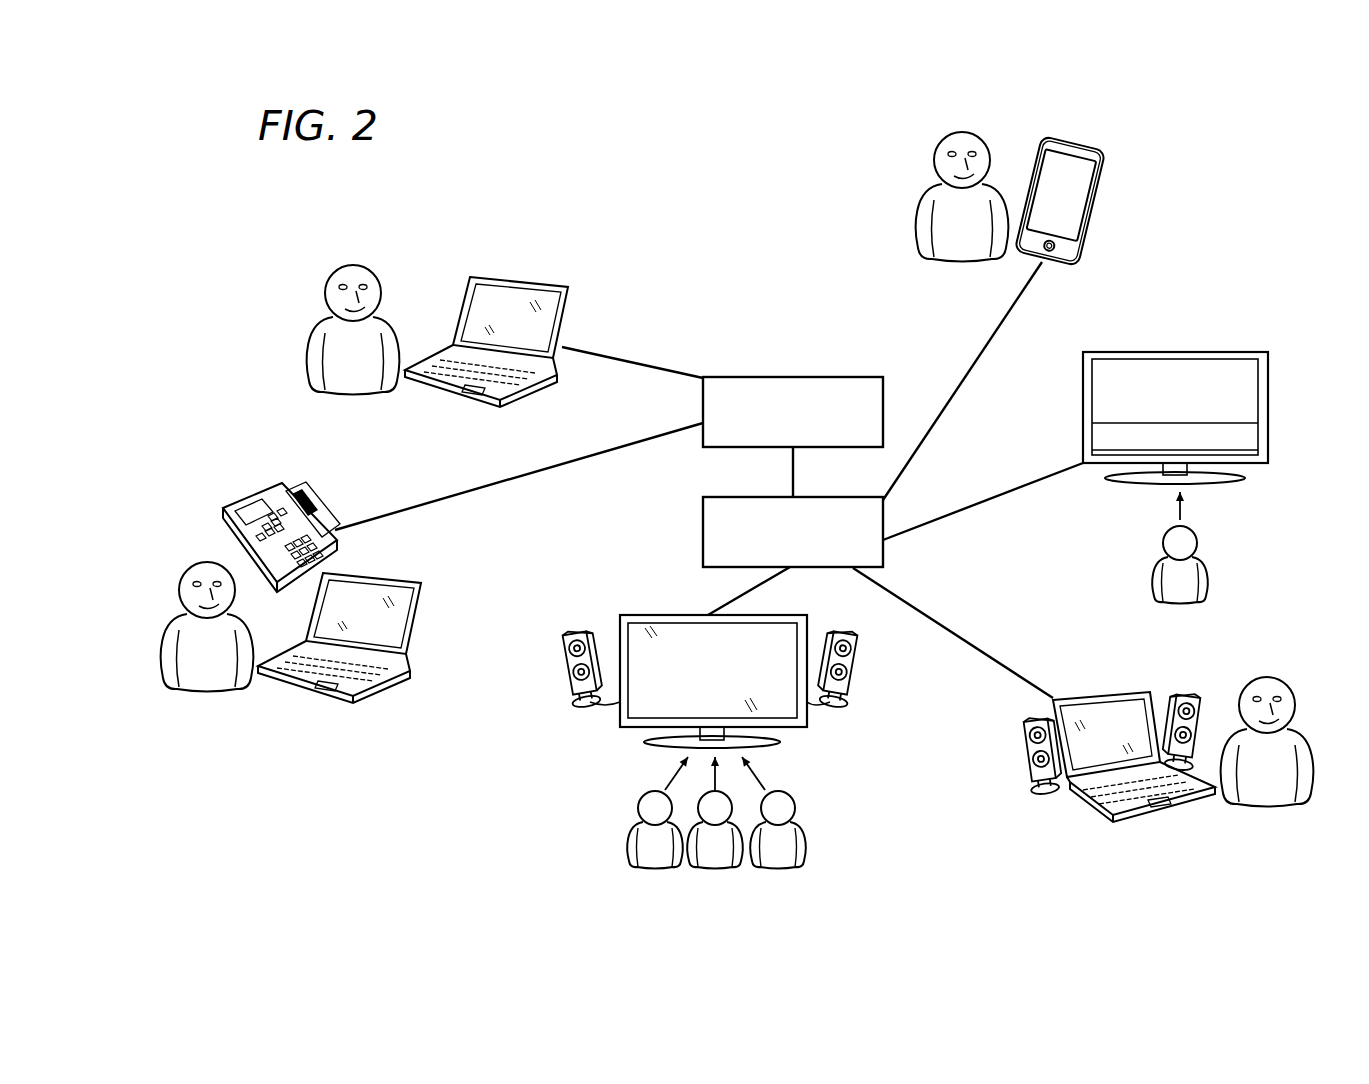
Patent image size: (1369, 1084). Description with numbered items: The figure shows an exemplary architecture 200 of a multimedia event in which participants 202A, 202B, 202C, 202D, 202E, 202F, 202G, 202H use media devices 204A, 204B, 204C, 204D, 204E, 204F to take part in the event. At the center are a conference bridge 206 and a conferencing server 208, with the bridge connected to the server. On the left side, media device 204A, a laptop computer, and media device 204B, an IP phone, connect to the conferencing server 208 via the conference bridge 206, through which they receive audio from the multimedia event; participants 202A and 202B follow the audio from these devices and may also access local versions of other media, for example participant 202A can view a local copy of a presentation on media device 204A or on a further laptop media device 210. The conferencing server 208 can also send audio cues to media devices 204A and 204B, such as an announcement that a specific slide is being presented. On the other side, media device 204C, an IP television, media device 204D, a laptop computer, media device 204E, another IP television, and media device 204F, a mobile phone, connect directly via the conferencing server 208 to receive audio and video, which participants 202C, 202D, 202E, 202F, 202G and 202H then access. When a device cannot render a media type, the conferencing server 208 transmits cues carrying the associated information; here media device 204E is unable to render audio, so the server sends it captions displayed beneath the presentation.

The architecture 200 is at (680, 215).
The participant 202A is at (354, 264).
The participant 202B is at (183, 567).
The participant 202C is at (654, 878).
The participant 202D is at (718, 878).
The participant 202E is at (783, 878).
The participant 202F is at (1293, 682).
The participant 202G is at (1208, 565).
The participant 202H is at (960, 132).
The media device 204A is at (511, 276).
The media device 204B is at (248, 500).
The media device 204C is at (620, 617).
The media device 204D is at (1163, 800).
The media device 204E is at (1172, 352).
The media device 204F is at (1100, 204).
The conference bridge 206 is at (792, 377).
The conferencing server 208 is at (703, 528).
The media device 210 is at (305, 700).